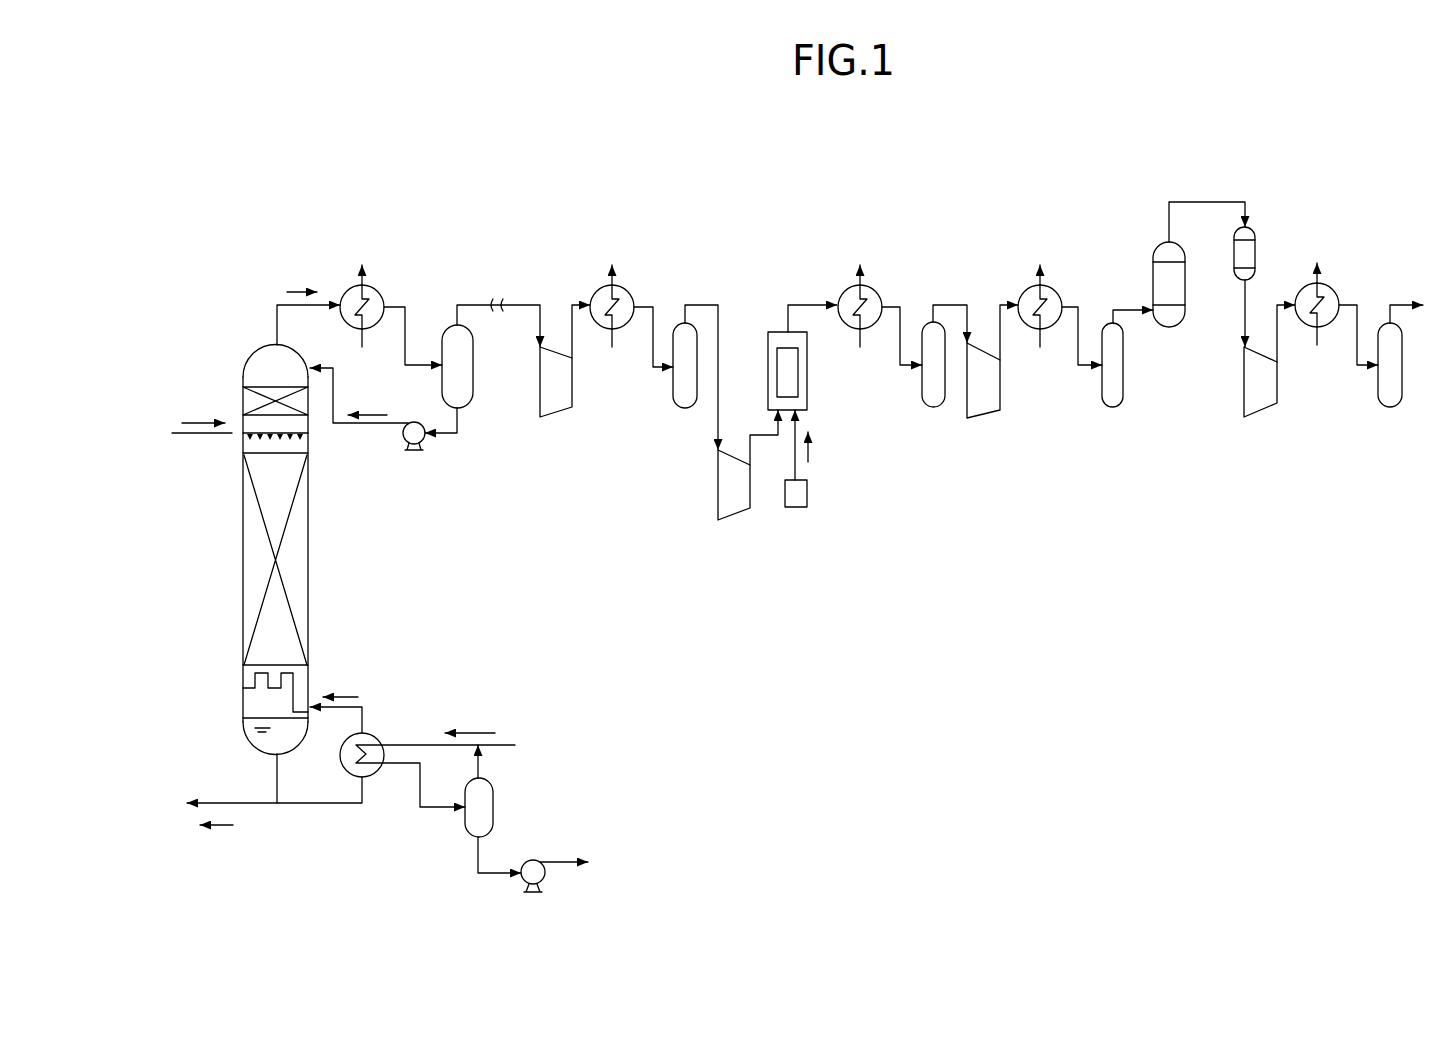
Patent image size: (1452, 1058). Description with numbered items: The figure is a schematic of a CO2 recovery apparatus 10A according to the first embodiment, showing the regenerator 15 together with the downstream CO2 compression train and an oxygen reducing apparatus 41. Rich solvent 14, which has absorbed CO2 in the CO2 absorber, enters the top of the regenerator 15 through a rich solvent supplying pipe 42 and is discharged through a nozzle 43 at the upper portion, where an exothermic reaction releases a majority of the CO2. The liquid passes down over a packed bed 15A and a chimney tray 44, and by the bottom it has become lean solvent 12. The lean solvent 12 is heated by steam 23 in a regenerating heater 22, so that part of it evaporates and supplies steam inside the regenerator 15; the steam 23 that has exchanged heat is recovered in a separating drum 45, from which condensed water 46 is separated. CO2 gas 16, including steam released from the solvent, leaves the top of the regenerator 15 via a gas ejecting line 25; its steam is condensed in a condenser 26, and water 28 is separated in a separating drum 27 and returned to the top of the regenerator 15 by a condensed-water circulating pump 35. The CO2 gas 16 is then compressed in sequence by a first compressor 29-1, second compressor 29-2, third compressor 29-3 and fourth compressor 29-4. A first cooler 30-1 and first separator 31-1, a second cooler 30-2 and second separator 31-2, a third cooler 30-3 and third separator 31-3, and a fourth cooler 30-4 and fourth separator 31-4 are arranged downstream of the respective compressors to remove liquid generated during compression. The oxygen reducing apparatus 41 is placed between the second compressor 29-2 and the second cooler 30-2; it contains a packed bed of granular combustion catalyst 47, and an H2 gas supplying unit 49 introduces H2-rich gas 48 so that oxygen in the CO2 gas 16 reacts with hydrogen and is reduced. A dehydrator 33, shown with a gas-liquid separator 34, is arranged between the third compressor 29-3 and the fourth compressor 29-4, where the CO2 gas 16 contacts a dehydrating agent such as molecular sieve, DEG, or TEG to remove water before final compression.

The CO2 recovery apparatus 10A is at (362, 170).
The regenerator 15 is at (250, 275).
The packed bed 15A is at (243, 562).
The CO2 gas 16 is at (312, 291).
The gas ejecting line 25 is at (277, 316).
The condenser 26 is at (378, 293).
The rich solvent 14 is at (202, 421).
The rich solvent supplying pipe 42 is at (200, 436).
The nozzle 43 is at (300, 438).
The separating drum 27 is at (466, 408).
The water 28 is at (374, 415).
The condensed-water circulating pump 35 is at (420, 450).
The chimney tray 44 is at (244, 688).
The lean solvent 12 is at (346, 697).
The regenerating heater 22 is at (378, 775).
The steam 23 is at (471, 733).
The separating drum 45 is at (493, 807).
The water 46 is at (565, 862).
The first compressor 29-1 is at (555, 414).
The first cooler 30-1 is at (620, 288).
The first separator 31-1 is at (683, 408).
The second compressor 29-2 is at (733, 520).
The oxygen reducing apparatus 41 is at (776, 332).
The combustion catalyst 47 is at (768, 358).
The H2-rich gas 48 is at (810, 450).
The H2 gas supplying unit 49 is at (797, 507).
The second cooler 30-2 is at (865, 287).
The second separator 31-2 is at (933, 407).
The third compressor 29-3 is at (985, 418).
The third cooler 30-3 is at (1046, 287).
The third separator 31-3 is at (1113, 407).
The dehydrator 33 is at (1155, 245).
The gas-liquid separator 34 is at (1234, 253).
The fourth compressor 29-4 is at (1260, 417).
The fourth cooler 30-4 is at (1302, 290).
The fourth separator 31-4 is at (1372, 262).